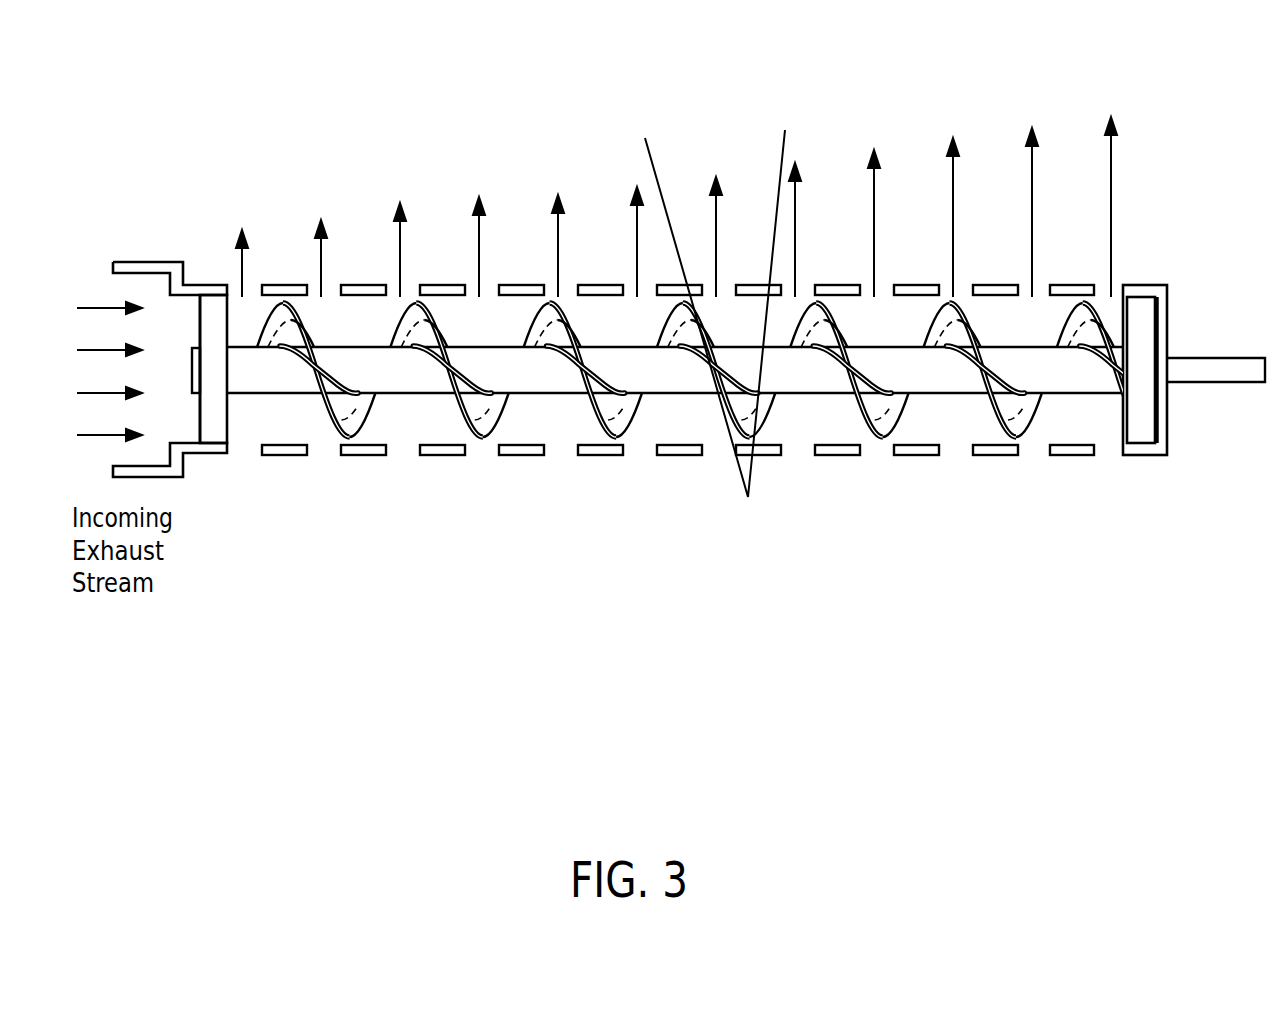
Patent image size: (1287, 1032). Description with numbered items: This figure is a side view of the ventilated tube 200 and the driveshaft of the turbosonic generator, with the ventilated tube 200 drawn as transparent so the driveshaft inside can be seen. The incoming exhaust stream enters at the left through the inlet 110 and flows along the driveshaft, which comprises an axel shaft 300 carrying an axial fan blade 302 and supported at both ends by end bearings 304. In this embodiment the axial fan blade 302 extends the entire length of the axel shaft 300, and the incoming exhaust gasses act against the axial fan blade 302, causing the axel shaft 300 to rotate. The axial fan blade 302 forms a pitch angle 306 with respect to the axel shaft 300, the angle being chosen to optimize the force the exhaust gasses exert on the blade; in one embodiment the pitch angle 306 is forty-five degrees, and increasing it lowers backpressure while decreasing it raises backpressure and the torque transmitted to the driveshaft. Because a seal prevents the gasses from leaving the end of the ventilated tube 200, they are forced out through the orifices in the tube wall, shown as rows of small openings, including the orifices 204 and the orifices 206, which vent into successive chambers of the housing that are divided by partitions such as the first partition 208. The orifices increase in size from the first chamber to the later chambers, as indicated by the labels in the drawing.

The inlet 110 is at (135, 270).
The ventilated tube 200 is at (508, 458).
The orifices 204 is at (554, 509).
The orifices 206 is at (712, 463).
The first partition 208 is at (886, 464).
The axel shaft 300 is at (813, 394).
The axial fan blade 302 is at (283, 317).
The end bearings 304 is at (215, 310).
The pitch angle 306 is at (776, 162).